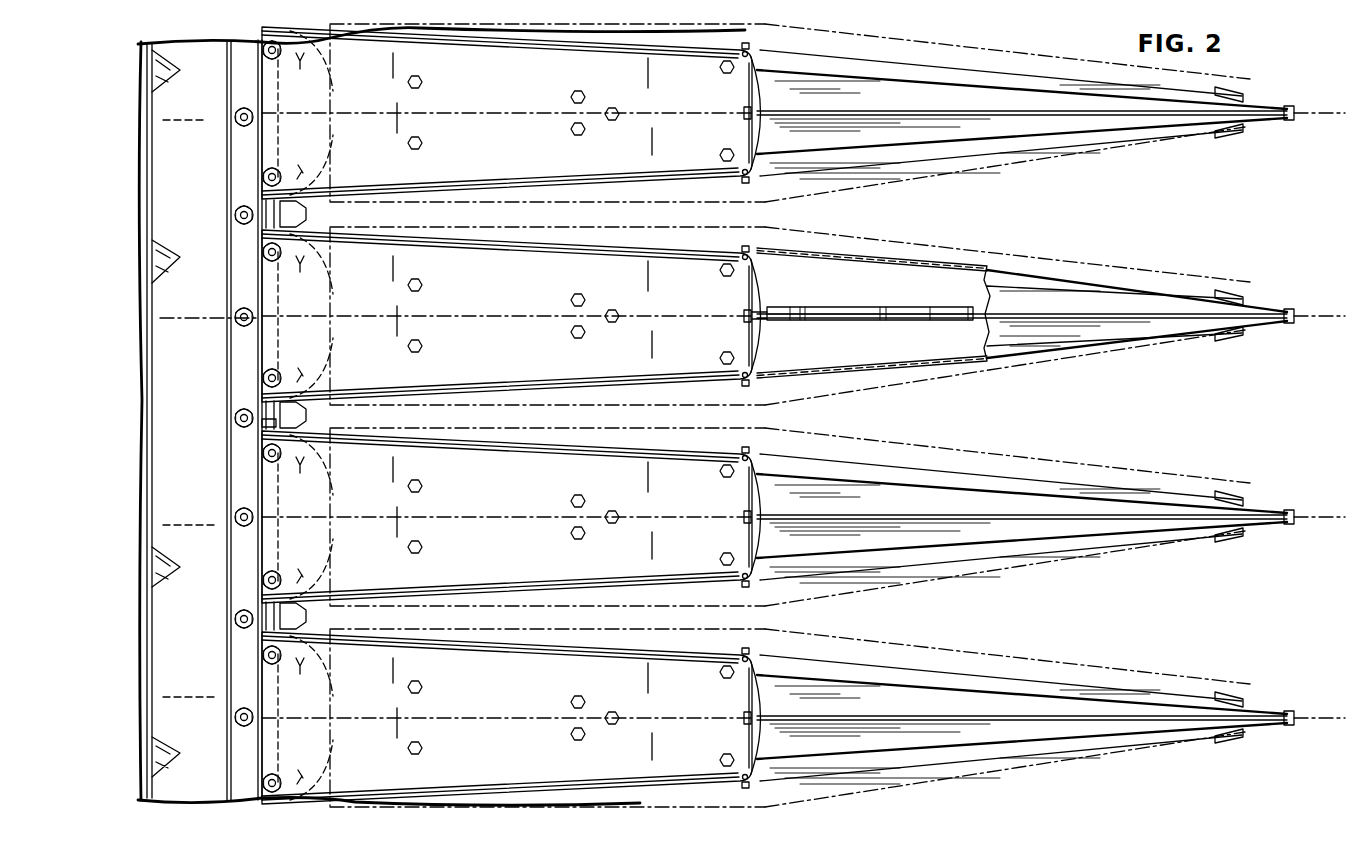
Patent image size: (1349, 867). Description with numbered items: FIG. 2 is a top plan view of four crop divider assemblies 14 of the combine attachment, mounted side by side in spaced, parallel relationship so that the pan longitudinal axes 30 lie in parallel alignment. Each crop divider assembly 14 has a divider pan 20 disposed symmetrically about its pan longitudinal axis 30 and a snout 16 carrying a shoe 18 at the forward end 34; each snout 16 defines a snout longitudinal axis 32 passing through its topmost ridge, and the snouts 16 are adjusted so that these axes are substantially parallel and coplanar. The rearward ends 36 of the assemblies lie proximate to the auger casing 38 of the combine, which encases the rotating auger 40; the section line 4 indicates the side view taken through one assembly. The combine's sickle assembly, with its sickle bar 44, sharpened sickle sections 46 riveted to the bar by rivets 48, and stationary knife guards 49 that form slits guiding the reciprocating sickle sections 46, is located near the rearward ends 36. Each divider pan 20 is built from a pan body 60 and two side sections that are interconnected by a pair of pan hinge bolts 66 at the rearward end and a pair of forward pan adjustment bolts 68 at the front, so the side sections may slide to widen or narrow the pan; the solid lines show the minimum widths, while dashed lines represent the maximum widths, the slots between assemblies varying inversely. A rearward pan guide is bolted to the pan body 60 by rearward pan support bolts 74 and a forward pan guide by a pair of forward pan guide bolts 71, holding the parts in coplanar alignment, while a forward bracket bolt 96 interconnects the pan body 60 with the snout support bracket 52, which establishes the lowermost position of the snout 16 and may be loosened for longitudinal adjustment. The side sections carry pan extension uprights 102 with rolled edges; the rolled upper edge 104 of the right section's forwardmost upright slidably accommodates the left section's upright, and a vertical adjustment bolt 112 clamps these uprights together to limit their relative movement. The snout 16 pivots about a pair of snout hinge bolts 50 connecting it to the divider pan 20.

The section line 4- 4 is at (170, 325).
The crop divider assembly 14 is at (1252, 226).
The snout 16 is at (975, 49).
The shoe 18 is at (1244, 98).
The divider pan 20 is at (574, 193).
The pan longitudinal axis 30 is at (397, 112).
The snout longitudinal axis 32 is at (1312, 112).
The forward end 34 is at (1328, 98).
The rearward end 36 is at (258, 97).
The auger casing 38 is at (171, 510).
The auger 40 is at (152, 150).
The sickle bar 44 is at (268, 422).
The sickle section 46 is at (328, 132).
The rivet 48 is at (262, 216).
The knife guard 49 is at (330, 160).
The snout hinge bolt 50 is at (752, 57).
The snout support bracket 52 is at (846, 324).
The pan body 60 is at (469, 148).
The pan hinge bolt 66 is at (281, 52).
The forward pan adjustment bolt 68 is at (720, 68).
The forward pan guide bolt 71 is at (571, 128).
The rearward pan support bolt 74 is at (420, 137).
The forward bracket bolt 96 is at (616, 108).
The pan extension upright 102 is at (560, 26).
The rolled upper edge 104 is at (763, 100).
The vertical adjustment bolt 112 is at (744, 114).